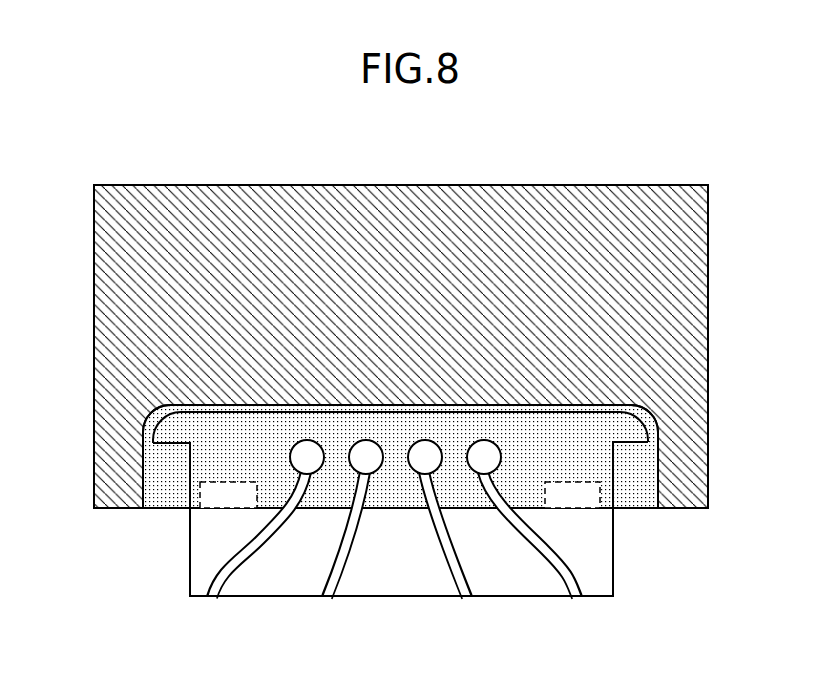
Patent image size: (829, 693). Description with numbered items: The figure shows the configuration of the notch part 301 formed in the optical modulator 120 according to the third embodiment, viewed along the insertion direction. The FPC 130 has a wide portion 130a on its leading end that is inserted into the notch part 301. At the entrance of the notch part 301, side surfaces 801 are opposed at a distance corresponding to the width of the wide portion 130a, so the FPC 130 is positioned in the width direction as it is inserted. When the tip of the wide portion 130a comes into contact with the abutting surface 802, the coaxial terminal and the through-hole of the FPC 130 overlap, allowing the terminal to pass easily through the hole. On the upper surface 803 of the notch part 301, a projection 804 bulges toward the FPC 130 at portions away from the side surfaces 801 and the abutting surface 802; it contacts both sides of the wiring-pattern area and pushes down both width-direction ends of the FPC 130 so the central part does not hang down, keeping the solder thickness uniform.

The optical modulator 120 is at (653, 185).
The FPC 130 is at (613, 582).
The wide portion 130a is at (625, 446).
The notch part 301 is at (172, 473).
The side surfaces 801 is at (143, 493).
The abutting surface 802 is at (654, 435).
The upper surface 803 is at (397, 490).
The projection 804 is at (228, 495).